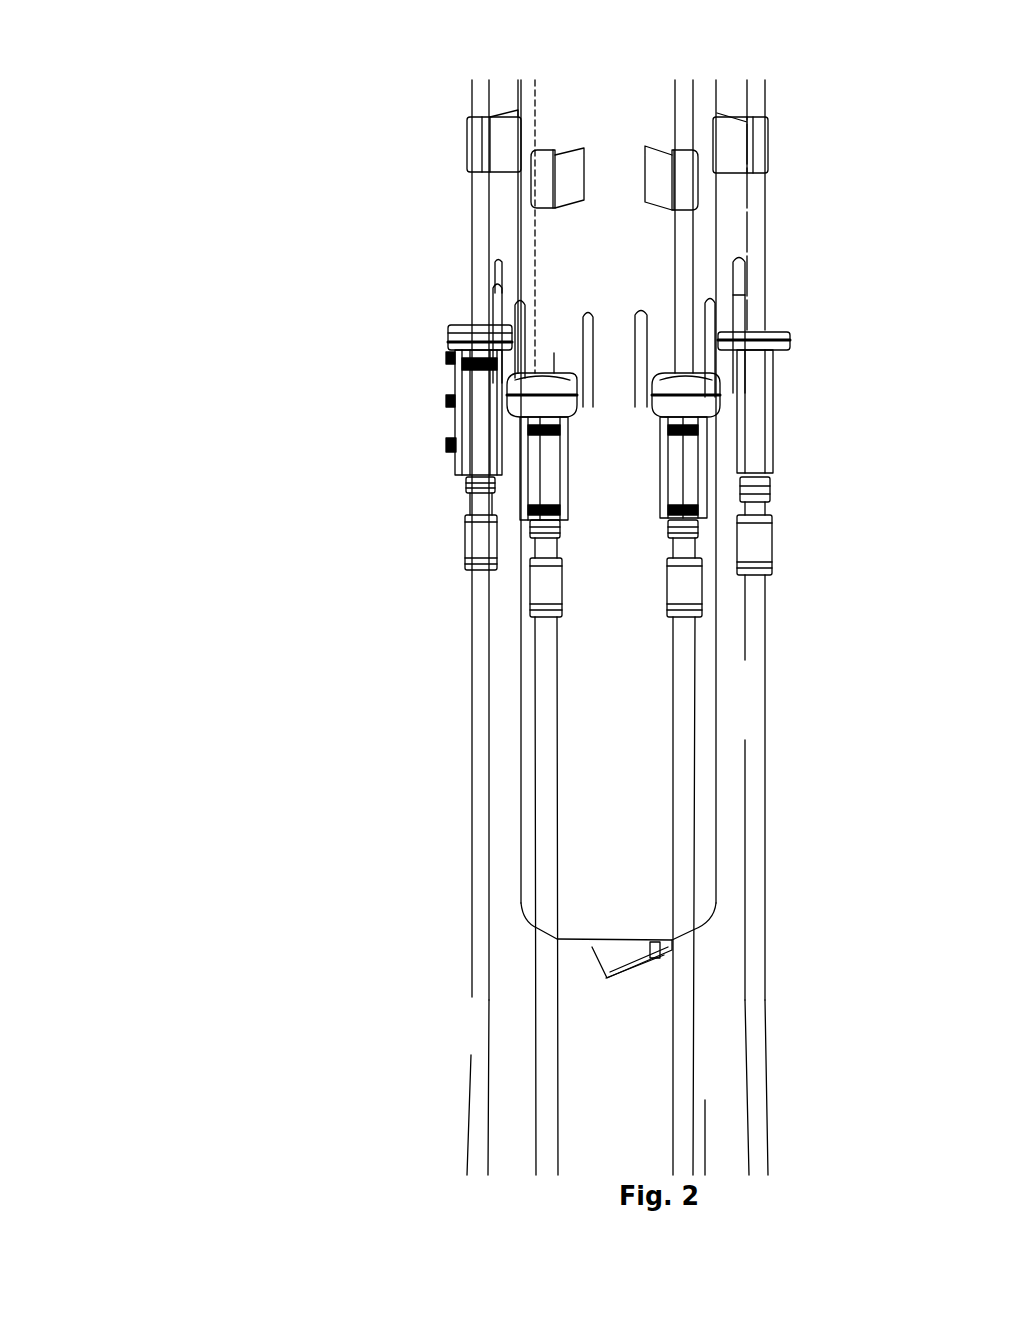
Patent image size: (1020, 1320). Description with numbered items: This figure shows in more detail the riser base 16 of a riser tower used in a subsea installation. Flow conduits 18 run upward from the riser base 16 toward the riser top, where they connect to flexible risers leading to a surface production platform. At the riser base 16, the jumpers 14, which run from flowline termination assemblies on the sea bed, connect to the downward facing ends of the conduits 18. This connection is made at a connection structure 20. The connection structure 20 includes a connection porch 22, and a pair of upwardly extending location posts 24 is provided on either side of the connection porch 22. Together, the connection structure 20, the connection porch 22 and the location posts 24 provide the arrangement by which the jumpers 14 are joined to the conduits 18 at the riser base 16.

The jumpers 14 is at (462, 906).
The riser base 16 is at (500, 758).
The flow conduits 18 is at (462, 92).
The connection structure 20 is at (430, 449).
The connection porch 22 is at (424, 357).
The location posts 24 is at (550, 294).